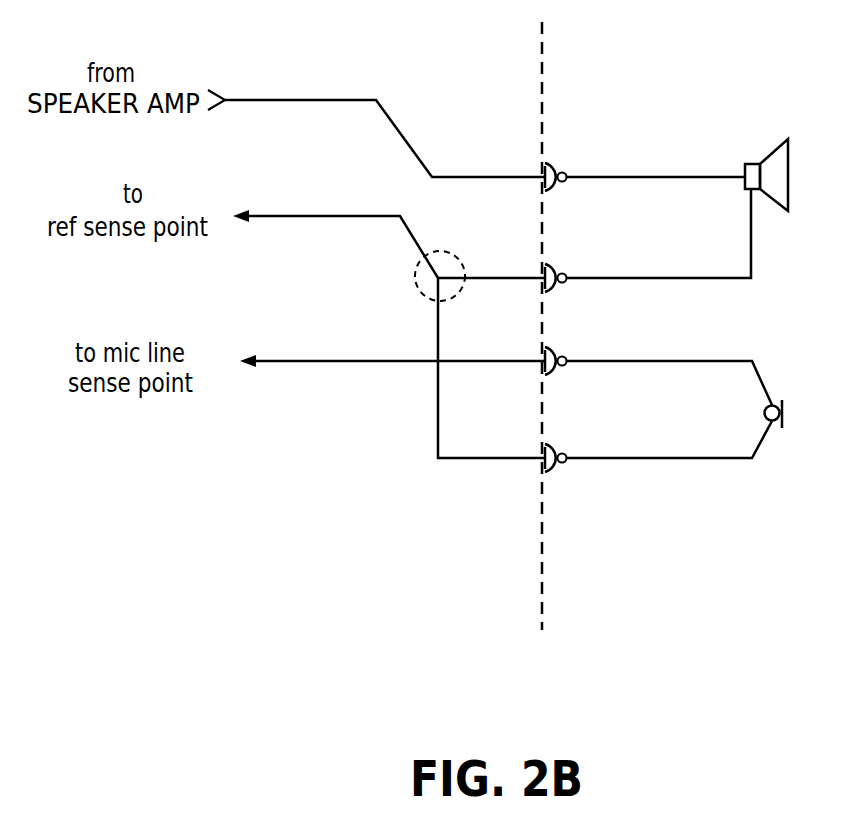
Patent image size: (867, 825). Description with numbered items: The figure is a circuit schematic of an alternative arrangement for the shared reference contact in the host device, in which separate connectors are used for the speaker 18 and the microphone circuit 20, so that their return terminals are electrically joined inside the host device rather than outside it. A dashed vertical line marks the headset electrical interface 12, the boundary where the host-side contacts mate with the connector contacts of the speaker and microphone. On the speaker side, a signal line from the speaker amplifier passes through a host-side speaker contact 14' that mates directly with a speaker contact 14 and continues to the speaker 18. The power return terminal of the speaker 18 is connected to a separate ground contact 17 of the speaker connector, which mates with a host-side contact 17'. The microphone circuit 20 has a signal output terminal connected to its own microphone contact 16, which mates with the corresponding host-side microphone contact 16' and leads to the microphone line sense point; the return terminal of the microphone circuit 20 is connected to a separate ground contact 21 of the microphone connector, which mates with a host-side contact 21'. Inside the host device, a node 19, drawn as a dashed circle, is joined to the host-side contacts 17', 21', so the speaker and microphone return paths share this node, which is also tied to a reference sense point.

The headset electrical interface 12 is at (552, 568).
The speaker contact 14 is at (652, 153).
The host-side speaker contact 14' is at (520, 157).
The microphone contact 16 is at (665, 357).
The host-side microphone contact 16' is at (520, 340).
The speaker ground contact 17 is at (655, 236).
The host-side speaker ground contact 17' is at (519, 259).
The speaker 18 is at (788, 158).
The node 19 is at (426, 298).
The microphone circuit 20 is at (783, 412).
The microphone ground contact 21 is at (665, 439).
The host-side microphone ground contact 21' is at (517, 436).